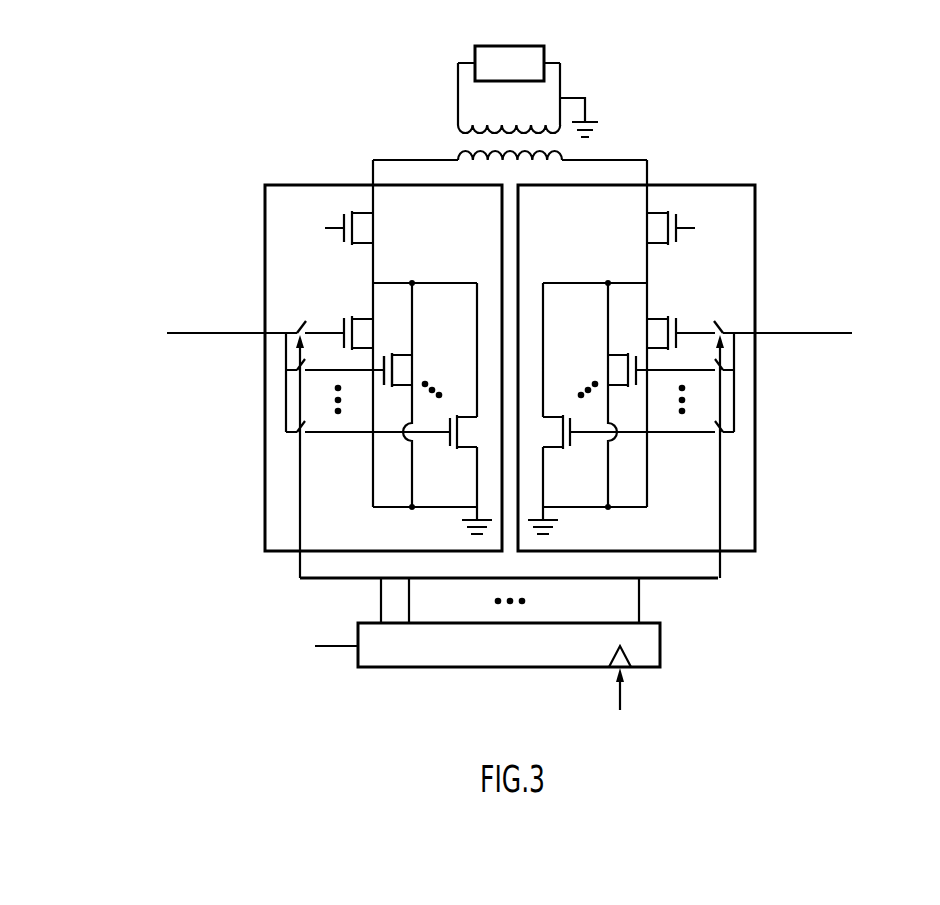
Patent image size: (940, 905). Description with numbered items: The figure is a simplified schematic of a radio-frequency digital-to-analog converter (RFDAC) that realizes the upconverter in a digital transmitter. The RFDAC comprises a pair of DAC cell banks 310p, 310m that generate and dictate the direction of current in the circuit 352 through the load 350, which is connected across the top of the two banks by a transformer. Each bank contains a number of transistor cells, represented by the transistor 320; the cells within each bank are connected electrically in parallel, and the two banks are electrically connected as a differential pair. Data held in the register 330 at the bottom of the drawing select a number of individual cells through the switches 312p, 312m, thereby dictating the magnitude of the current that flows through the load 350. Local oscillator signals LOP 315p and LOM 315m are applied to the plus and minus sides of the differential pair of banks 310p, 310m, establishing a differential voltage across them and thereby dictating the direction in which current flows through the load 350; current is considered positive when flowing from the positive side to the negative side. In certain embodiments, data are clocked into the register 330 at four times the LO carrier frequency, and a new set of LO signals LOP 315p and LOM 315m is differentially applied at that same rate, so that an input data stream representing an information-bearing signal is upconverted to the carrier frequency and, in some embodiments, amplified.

The load 350 is at (475, 53).
The circuit 352 is at (562, 80).
The DAC cell bank 310p is at (265, 202).
The DAC cell bank 310m is at (754, 202).
The switch 312p is at (292, 320).
The switch 312m is at (708, 323).
The LOP local oscillator signal 315p is at (233, 334).
The LOM local oscillator signal 315m is at (786, 334).
The transistor cell 320 is at (403, 383).
The register 330 is at (660, 652).